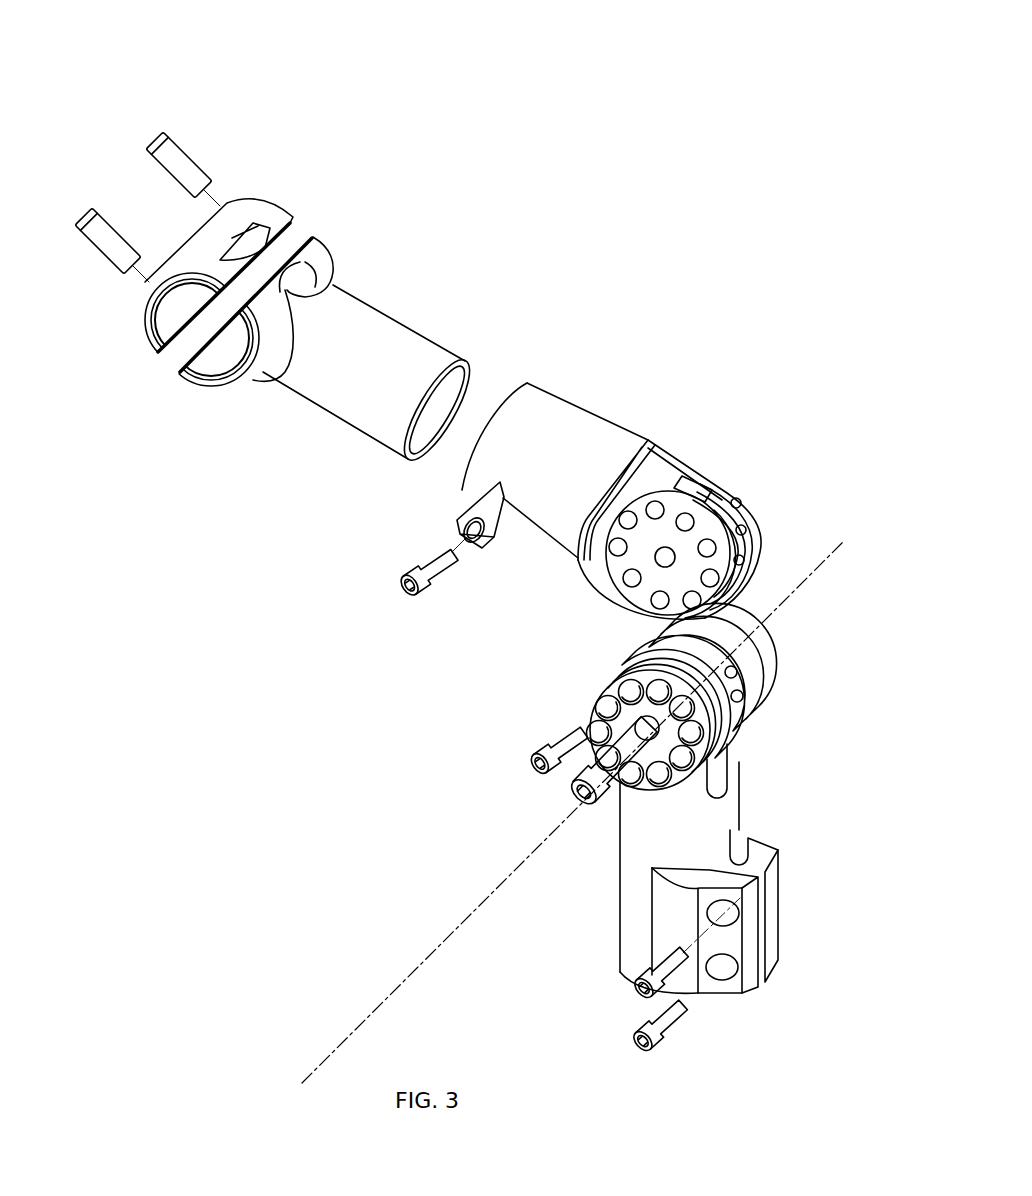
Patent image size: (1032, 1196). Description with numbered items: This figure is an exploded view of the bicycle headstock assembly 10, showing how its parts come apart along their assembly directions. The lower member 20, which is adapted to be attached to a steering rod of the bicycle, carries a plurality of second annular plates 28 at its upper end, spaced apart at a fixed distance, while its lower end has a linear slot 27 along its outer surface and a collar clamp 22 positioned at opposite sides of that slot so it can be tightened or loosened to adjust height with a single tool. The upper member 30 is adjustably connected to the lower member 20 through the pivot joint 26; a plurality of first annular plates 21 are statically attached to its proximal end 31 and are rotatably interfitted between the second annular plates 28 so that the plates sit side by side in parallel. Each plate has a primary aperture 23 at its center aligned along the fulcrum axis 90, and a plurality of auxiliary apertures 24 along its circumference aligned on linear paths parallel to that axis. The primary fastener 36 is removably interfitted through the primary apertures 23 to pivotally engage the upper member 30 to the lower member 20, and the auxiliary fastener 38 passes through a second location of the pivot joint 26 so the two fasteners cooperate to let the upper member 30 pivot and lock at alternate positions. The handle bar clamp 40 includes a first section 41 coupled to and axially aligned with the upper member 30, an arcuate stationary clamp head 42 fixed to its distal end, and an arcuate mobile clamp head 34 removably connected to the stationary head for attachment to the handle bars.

The bicycle headstock assembly 10 is at (611, 116).
The lower member 20 is at (778, 808).
The first annular plates 21 is at (725, 540).
The collar clamp 22 is at (778, 908).
The primary aperture 23 is at (648, 725).
The auxiliary apertures 24 is at (628, 520).
The pivot joint 26 is at (774, 635).
The linear slot 27 is at (767, 948).
The second annular plates 28 is at (757, 678).
The upper member 30 is at (735, 461).
The proximal end 31 is at (654, 462).
The arcuate mobile clamp head 34 is at (140, 328).
The primary fastener 36 is at (610, 798).
The auxiliary fastener 38 is at (567, 731).
The handle bar clamp 40 is at (360, 190).
The first section 41 is at (342, 308).
The arcuate stationary clamp head 42 is at (322, 258).
The fulcrum axis 90 is at (318, 1065).